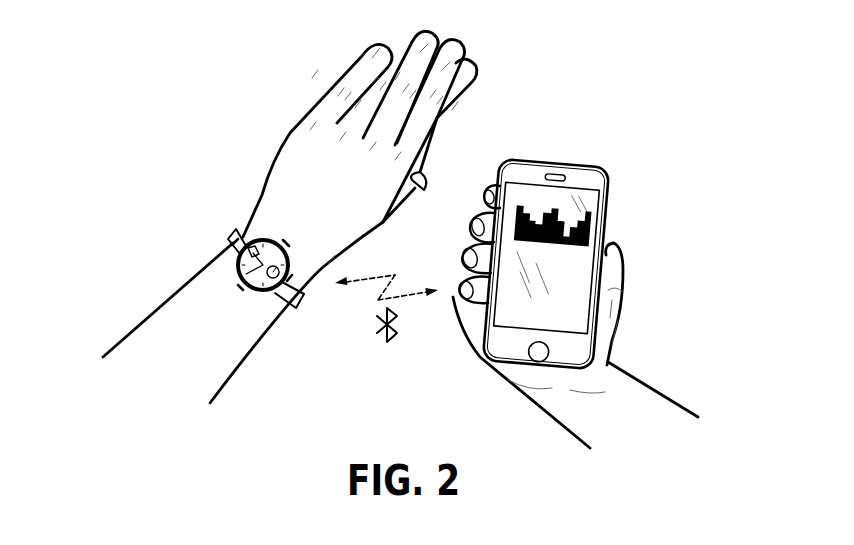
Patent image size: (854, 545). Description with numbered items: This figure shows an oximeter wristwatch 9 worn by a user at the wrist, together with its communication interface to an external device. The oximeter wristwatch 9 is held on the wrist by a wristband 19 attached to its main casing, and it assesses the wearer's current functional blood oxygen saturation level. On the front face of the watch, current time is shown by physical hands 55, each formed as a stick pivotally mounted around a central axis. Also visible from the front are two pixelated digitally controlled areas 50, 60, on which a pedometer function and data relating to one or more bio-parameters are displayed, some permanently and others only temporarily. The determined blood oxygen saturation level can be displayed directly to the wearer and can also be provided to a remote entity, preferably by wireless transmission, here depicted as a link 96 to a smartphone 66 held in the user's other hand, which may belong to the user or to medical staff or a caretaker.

The oximeter wristwatch 9 is at (264, 218).
The wristband 19 is at (242, 236).
The pixelated digitally controlled area 50 is at (243, 252).
The physical hands 55 is at (253, 294).
The pixelated digitally controlled area 60 is at (270, 280).
The smartphone 66 is at (586, 146).
The wireless communication link 96 is at (395, 322).